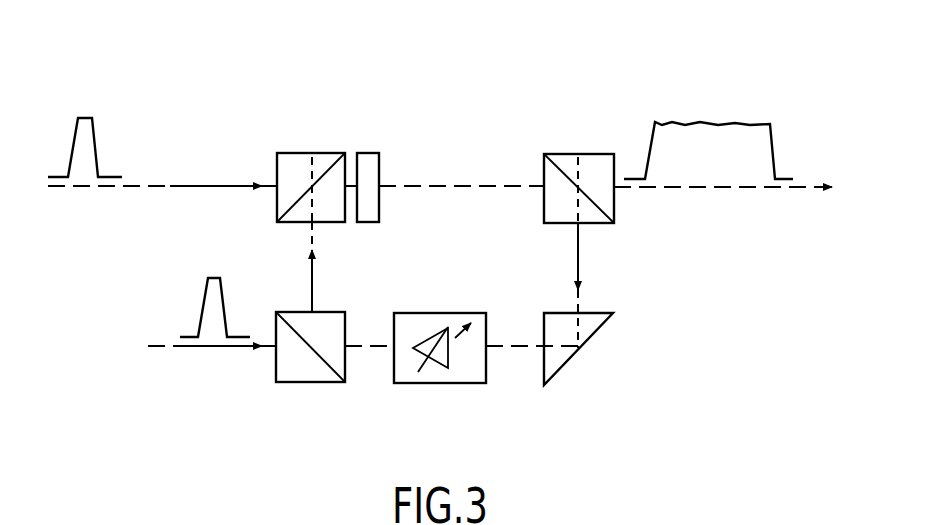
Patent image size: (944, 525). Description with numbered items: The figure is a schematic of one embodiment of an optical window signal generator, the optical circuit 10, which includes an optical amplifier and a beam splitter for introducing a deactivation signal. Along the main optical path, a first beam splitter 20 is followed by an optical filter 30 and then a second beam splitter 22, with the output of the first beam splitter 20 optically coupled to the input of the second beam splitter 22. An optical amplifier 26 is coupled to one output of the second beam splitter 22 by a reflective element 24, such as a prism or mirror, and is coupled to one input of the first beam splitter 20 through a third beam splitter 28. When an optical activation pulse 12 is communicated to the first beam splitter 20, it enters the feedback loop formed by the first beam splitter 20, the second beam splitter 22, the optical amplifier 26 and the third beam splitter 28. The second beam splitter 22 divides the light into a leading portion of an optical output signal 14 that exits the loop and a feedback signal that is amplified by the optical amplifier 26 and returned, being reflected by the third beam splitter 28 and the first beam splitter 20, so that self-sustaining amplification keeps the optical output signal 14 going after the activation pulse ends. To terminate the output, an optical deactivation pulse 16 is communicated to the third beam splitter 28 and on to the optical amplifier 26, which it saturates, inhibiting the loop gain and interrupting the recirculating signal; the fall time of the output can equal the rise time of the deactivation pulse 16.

The optical circuit 10 is at (159, 27).
The optical activation pulse 12 is at (85, 118).
The optical output signal 14 is at (727, 112).
The optical deactivation pulse 16 is at (208, 280).
The first beam splitter 20 is at (277, 158).
The second beam splitter 22 is at (544, 160).
The reflective element 24 is at (605, 325).
The optical amplifier 26 is at (432, 383).
The third beam splitter 28 is at (278, 382).
The optical filter 30 is at (379, 158).